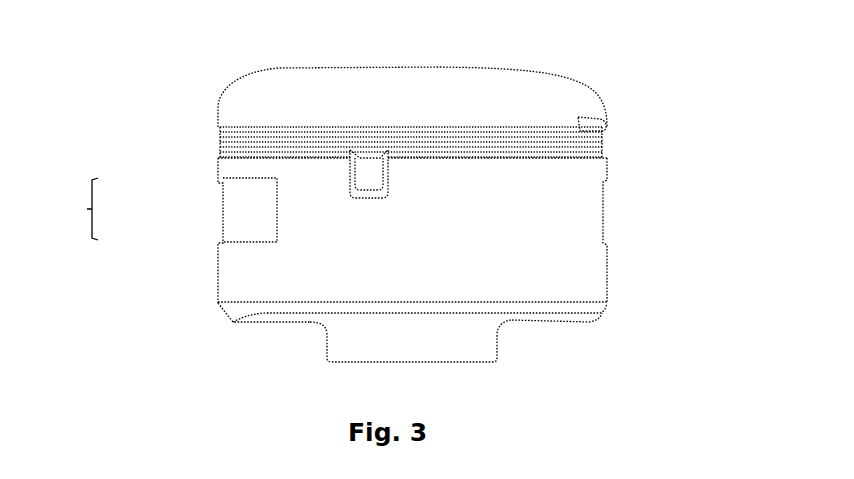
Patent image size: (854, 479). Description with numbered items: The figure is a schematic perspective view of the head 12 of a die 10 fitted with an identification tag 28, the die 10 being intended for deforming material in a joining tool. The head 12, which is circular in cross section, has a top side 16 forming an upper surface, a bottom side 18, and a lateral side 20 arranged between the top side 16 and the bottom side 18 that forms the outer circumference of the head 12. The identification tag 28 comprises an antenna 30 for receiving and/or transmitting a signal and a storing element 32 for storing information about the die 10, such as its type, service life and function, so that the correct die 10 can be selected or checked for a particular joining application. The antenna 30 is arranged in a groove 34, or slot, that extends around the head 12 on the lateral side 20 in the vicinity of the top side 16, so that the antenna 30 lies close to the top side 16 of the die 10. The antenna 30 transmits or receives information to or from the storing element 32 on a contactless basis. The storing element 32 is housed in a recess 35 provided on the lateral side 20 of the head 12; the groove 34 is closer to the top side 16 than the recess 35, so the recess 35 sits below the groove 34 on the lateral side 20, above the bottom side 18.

The die 10 is at (652, 44).
The head 12 is at (600, 267).
The top side 16 is at (295, 82).
The bottom side 18 is at (260, 315).
The lateral side 20 is at (607, 298).
The identification tag 28 is at (84, 209).
The antenna 30 is at (228, 150).
The storing element 32 is at (367, 182).
The groove 34 is at (608, 155).
The recess 35 is at (367, 198).